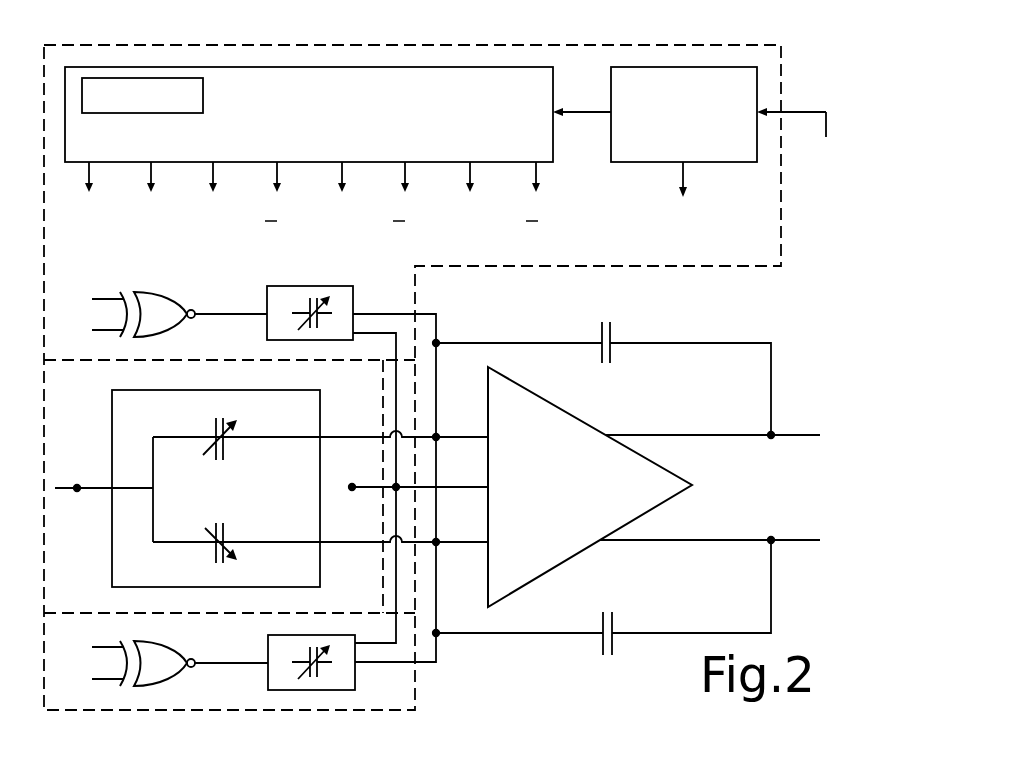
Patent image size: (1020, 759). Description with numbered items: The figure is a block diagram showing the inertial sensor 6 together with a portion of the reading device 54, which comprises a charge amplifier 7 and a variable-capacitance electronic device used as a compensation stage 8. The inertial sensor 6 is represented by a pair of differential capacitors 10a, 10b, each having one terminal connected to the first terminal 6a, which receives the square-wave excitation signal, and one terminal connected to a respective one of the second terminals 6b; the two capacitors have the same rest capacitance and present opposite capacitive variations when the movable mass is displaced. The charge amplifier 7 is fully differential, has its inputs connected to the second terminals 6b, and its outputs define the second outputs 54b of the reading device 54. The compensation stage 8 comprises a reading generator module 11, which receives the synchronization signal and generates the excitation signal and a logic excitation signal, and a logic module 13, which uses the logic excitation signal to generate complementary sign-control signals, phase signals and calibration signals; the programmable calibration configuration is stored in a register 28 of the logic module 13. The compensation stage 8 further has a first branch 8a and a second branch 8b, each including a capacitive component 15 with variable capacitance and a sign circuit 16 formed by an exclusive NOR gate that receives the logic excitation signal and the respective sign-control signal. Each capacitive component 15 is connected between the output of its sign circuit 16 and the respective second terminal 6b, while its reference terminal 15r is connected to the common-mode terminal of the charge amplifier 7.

The register 28 is at (142, 78).
The logic module 13 is at (553, 135).
The reading generator module 11 is at (710, 162).
The compensation stage 8 is at (645, 272).
The first branch 8a is at (187, 283).
The second branch 8b is at (187, 646).
The sign circuit 16 is at (168, 327).
The capacitive component 15 is at (303, 286).
The reference terminal 15r is at (398, 491).
The inertial sensor 6 is at (169, 488).
The first terminal 6a is at (74, 487).
The second terminals 6b is at (437, 432).
The differential capacitor 10a is at (213, 433).
The differential capacitor 10b is at (226, 535).
The reading device 54 is at (758, 316).
The second outputs 54b is at (818, 438).
The charge amplifier 7 is at (568, 661).